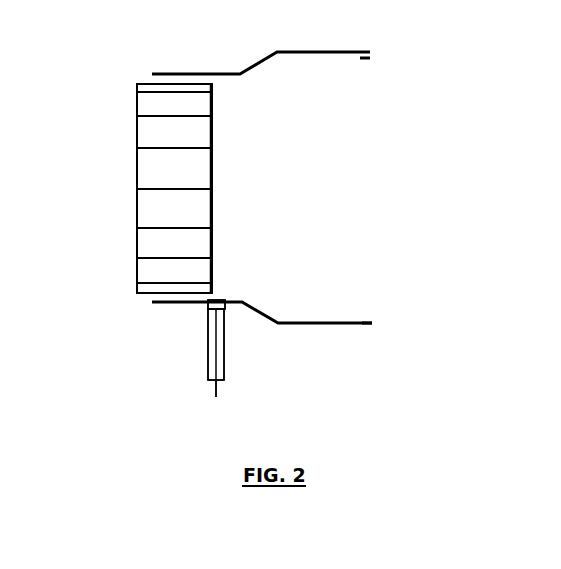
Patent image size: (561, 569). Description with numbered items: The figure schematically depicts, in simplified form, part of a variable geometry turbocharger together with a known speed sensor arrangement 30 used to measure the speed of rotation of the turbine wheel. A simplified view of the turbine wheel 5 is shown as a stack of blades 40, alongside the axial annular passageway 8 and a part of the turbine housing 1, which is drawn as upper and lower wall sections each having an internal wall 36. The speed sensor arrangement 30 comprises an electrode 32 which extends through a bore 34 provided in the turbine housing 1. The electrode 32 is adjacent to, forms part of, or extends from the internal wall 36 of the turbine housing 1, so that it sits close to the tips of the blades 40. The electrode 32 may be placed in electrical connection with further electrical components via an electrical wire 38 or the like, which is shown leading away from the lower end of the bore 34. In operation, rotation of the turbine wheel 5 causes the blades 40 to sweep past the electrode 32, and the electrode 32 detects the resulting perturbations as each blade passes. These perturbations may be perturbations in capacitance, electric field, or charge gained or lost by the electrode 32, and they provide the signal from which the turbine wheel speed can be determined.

The turbine housing 1 is at (341, 36).
The turbine wheel 5 is at (144, 100).
The axial annular passageway 8 is at (316, 180).
The speed sensor arrangement 30 is at (186, 355).
The electrode 32 is at (218, 302).
The bore 34 is at (224, 347).
The internal wall 36 is at (360, 58).
The electrical wire 38 is at (220, 389).
The blades 40 is at (155, 189).